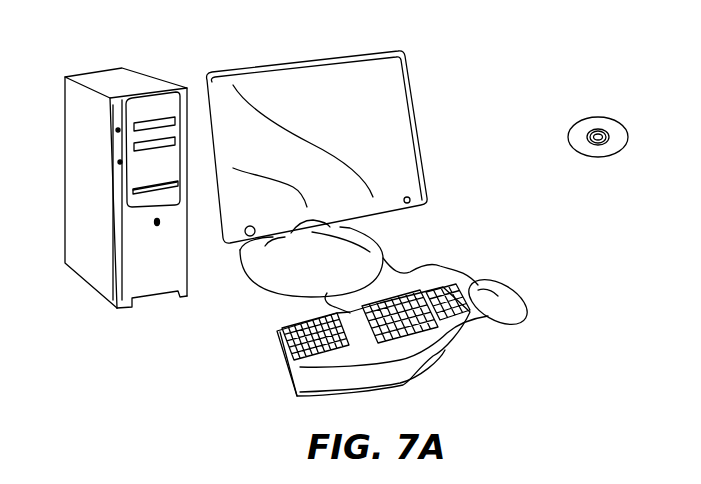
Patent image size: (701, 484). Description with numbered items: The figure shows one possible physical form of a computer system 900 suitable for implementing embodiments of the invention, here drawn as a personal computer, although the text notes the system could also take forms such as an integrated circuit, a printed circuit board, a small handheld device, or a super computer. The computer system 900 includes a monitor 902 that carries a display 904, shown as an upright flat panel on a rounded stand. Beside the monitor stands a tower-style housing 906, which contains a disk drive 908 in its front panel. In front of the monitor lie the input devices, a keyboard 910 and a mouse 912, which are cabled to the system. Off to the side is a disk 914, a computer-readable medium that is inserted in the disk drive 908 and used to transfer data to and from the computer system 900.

The computer system 900 is at (530, 33).
The monitor 902 is at (420, 145).
The display 904 is at (378, 88).
The housing 906 is at (113, 72).
The disk drive 908 is at (172, 187).
The keyboard 910 is at (285, 368).
The mouse 912 is at (515, 292).
The disk 914 is at (617, 117).